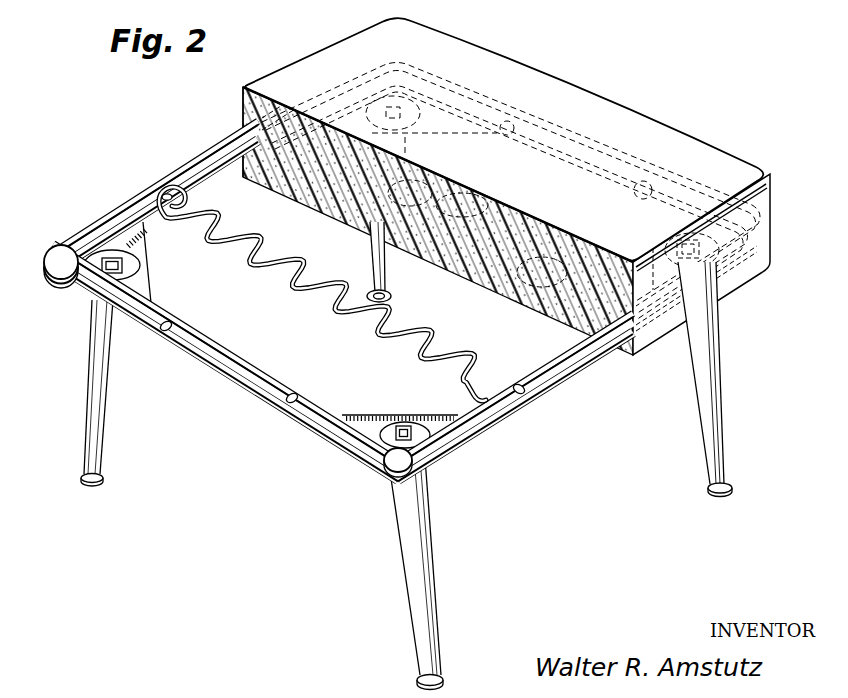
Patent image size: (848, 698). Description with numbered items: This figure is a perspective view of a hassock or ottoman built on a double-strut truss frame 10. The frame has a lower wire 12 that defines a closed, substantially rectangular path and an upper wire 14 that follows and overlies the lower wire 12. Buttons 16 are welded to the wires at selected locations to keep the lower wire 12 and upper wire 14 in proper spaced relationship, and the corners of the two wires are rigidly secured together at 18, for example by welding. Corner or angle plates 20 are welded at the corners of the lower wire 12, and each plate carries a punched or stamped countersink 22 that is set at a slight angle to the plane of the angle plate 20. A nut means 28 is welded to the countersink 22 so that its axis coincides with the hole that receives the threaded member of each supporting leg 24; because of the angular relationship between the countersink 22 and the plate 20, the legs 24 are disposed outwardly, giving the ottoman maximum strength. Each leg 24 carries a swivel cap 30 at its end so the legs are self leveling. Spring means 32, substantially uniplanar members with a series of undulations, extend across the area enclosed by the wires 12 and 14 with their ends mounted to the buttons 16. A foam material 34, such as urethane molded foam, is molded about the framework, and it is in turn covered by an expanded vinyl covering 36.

The double-strut truss frame 10 is at (120, 203).
The lower wire 12 is at (233, 380).
The upper wire 14 is at (213, 340).
The buttons 16 is at (165, 335).
The corner 18 is at (44, 261).
The corner or angle plate 20 is at (151, 270).
The countersink 22 is at (139, 261).
The supporting legs 24 is at (98, 385).
The nut means 28 is at (92, 282).
The swivel cap 30 is at (80, 481).
The spring means 32 is at (328, 280).
The foam material 34 is at (478, 268).
The expanded vinyl covering 36 is at (506, 186).